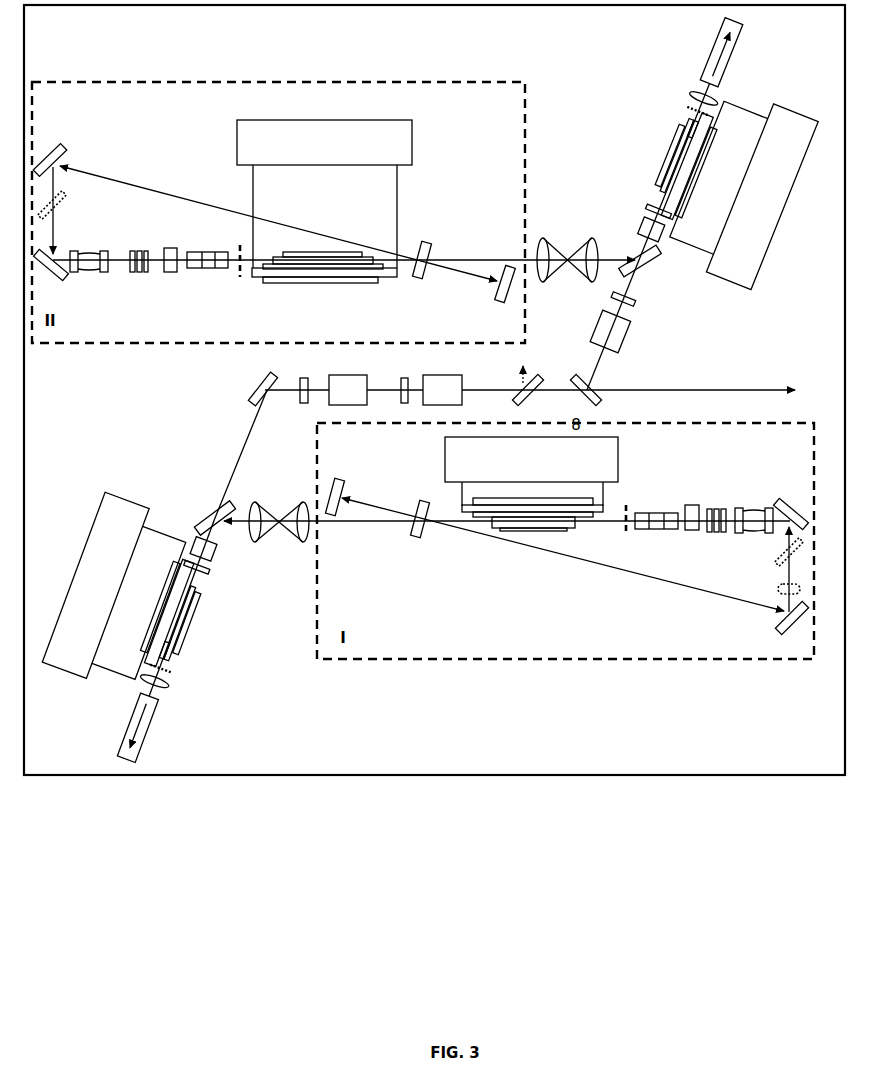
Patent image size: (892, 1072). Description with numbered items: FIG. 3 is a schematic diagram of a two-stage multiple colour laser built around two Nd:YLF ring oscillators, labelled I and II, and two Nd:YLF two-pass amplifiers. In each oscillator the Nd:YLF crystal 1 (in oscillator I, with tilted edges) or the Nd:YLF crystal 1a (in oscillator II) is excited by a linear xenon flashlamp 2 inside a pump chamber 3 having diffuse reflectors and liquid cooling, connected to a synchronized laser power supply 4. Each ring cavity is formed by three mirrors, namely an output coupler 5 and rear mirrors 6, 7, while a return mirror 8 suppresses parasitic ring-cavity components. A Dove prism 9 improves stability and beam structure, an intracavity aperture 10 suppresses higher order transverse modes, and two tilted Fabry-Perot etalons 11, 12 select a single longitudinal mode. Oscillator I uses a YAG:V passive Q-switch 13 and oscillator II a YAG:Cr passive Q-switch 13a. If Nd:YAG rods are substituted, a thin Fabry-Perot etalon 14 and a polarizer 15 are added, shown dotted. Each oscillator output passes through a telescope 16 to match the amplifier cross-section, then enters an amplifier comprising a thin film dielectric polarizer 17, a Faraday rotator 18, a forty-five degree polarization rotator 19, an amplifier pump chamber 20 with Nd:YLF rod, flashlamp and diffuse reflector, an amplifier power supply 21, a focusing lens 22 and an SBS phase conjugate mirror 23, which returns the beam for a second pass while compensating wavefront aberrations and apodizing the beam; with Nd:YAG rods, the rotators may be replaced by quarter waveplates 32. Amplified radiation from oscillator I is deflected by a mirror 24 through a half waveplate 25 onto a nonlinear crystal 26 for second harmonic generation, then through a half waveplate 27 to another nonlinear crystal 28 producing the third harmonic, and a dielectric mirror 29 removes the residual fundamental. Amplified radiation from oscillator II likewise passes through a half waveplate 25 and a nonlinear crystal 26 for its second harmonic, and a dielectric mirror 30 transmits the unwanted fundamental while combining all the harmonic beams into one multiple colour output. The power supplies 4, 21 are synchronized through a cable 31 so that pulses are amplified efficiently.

The Nd:YLF crystal 1 is at (576, 522).
The Nd:YLF crystal 1a is at (284, 255).
The linear xenon flashlamp 2 is at (387, 280).
The pump chamber 3 is at (427, 408).
The laser power supply 4 is at (427, 313).
The output coupler 5 is at (426, 382).
The rear mirror 6 is at (420, 393).
The rear mirror 7 is at (421, 389).
The return mirror 8 is at (421, 390).
The Dove prism 9 is at (432, 381).
The intracavity aperture 10 is at (432, 380).
The tilted Fabry-Perot etalon 11 is at (421, 383).
The tilted Fabry-Perot etalon 12 is at (427, 382).
The passive Q-switch 13 is at (691, 505).
The passive Q-switch 13a is at (170, 252).
The thin Fabry-Perot etalon 14 is at (777, 589).
The polarizer 15 is at (420, 379).
The telescope 16 is at (423, 383).
The thin film dielectric polarizer 17 is at (430, 390).
The Faraday rotator 18 is at (427, 391).
The 45° polarization rotator 19 is at (428, 391).
The amplifier pump chamber 20 is at (429, 390).
The amplifier power supply 21 is at (430, 390).
The focusing lens 22 is at (429, 391).
The SBS phase conjugate mirror 23 is at (429, 390).
The mirror 24 is at (262, 381).
The half waveplate 25 is at (474, 347).
The nonlinear crystal 26 is at (497, 357).
The half waveplate 27 is at (404, 380).
The nonlinear crystal 28 is at (442, 390).
The dielectric mirror 29 is at (532, 384).
The dielectric mirror 30 is at (584, 397).
The cable 31 is at (335, 120).
The quarter waveplate 32 is at (428, 390).